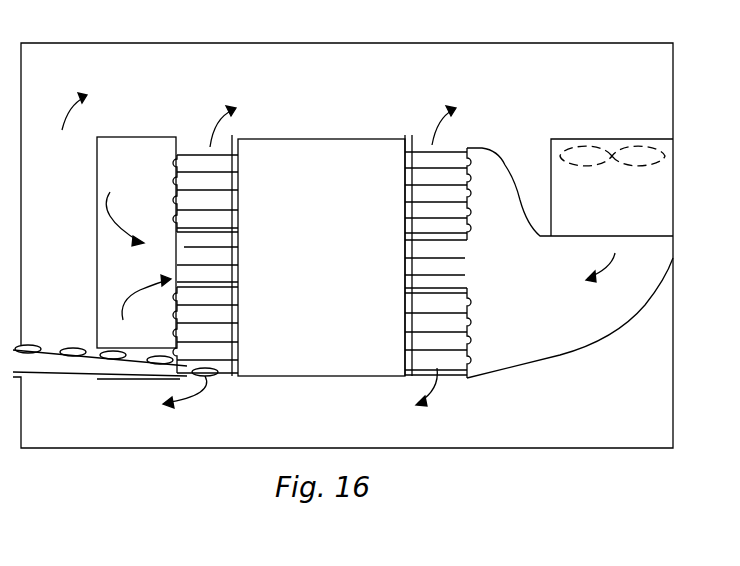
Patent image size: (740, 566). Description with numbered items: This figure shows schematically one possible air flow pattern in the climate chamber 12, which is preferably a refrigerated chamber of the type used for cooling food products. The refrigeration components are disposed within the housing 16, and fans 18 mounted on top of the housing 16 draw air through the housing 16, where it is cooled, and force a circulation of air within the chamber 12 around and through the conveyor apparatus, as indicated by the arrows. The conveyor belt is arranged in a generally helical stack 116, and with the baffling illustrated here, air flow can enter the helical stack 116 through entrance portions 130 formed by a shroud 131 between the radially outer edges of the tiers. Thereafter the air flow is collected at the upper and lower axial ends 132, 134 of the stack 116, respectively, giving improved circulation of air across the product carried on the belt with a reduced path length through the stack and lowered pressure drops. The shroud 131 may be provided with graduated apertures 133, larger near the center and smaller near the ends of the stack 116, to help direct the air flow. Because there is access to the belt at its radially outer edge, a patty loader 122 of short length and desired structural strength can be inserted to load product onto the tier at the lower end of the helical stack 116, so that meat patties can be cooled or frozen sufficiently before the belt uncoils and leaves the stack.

The climate chamber 12 is at (438, 43).
The housing 16 is at (551, 156).
The fans 18 is at (597, 150).
The helical stack 116 is at (187, 250).
The patty loader 122 is at (77, 378).
The entrance portions 130 is at (465, 252).
The shroud 131 is at (468, 329).
The upper axial end 132 is at (196, 154).
The graduated apertures 133 is at (180, 218).
The lower axial end 134 is at (443, 372).